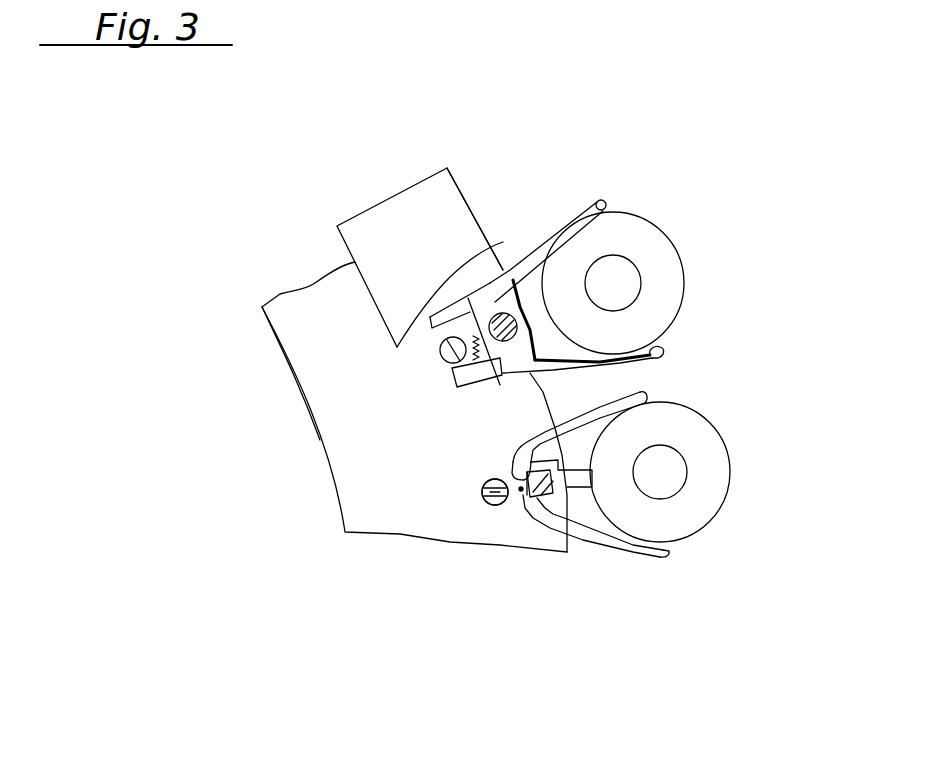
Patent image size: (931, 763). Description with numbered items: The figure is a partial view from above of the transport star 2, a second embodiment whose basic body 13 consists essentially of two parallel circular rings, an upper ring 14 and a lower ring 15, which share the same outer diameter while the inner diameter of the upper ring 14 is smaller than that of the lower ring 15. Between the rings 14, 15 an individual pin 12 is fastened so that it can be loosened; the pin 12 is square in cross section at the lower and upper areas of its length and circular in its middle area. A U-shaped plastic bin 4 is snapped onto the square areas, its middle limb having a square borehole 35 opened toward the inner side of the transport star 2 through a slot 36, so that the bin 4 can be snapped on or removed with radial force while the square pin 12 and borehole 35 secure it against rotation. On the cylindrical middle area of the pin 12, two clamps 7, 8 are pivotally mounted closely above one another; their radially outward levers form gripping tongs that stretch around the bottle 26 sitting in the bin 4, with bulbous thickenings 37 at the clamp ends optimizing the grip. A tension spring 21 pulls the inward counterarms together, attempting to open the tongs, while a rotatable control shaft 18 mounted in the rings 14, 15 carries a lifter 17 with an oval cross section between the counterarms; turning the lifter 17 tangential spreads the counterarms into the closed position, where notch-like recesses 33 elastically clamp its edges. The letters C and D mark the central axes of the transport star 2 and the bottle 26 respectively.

The transport star 2 is at (444, 132).
The bin 4 is at (623, 553).
The clamp 7 is at (603, 200).
The clamp 8 is at (660, 350).
The pin 12 is at (502, 313).
The basic body 13 is at (306, 188).
The upper ring 14 is at (400, 213).
The lower ring 15 is at (295, 310).
The lifter 17 is at (502, 507).
The control shaft 18 is at (490, 510).
The tension spring 21 is at (500, 313).
The bottle 26 is at (703, 456).
The notch-like recess 33 is at (450, 370).
The square borehole 35 is at (520, 493).
The slot 36 is at (543, 503).
The bulbous thickening 37 is at (650, 348).
The axis C is at (338, 392).
The roller D is at (657, 263).